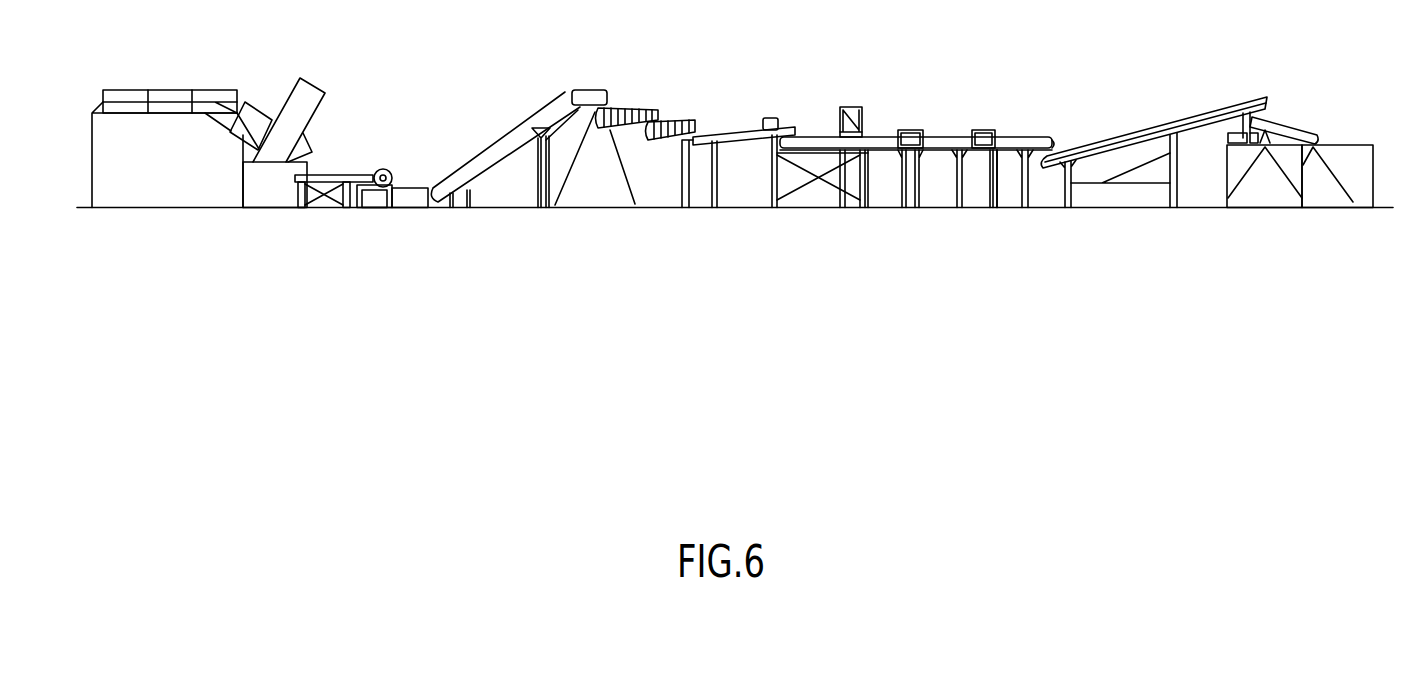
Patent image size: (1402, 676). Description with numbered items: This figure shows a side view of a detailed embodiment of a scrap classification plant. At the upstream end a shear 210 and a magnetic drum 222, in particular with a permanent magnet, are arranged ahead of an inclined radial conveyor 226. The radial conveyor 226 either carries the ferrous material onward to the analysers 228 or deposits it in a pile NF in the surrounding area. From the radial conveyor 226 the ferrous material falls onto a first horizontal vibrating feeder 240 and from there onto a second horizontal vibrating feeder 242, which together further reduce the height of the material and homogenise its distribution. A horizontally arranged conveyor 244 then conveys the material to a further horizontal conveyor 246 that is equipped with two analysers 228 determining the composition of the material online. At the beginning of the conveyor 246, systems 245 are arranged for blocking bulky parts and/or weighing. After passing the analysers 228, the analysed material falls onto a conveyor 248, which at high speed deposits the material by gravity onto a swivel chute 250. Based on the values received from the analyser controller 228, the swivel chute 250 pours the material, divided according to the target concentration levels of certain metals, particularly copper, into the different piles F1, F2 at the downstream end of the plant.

The shear 210 is at (150, 166).
The magnetic drum 222 is at (363, 167).
The radial conveyor 226 is at (500, 147).
The pile NF is at (593, 173).
The first horizontal vibrating feeder 240 is at (635, 107).
The second horizontal vibrating feeder 242 is at (680, 118).
The horizontally arranged conveyor 244 is at (725, 137).
The systems for blocking bulky parts and/or weighing 245 is at (850, 107).
The horizontal conveyor 246 is at (882, 140).
The analysers 228 is at (988, 130).
The conveyor 248 is at (1192, 113).
The swivel chute 250 is at (1285, 125).
The pile F1 is at (1260, 178).
The pile F2 is at (1320, 180).